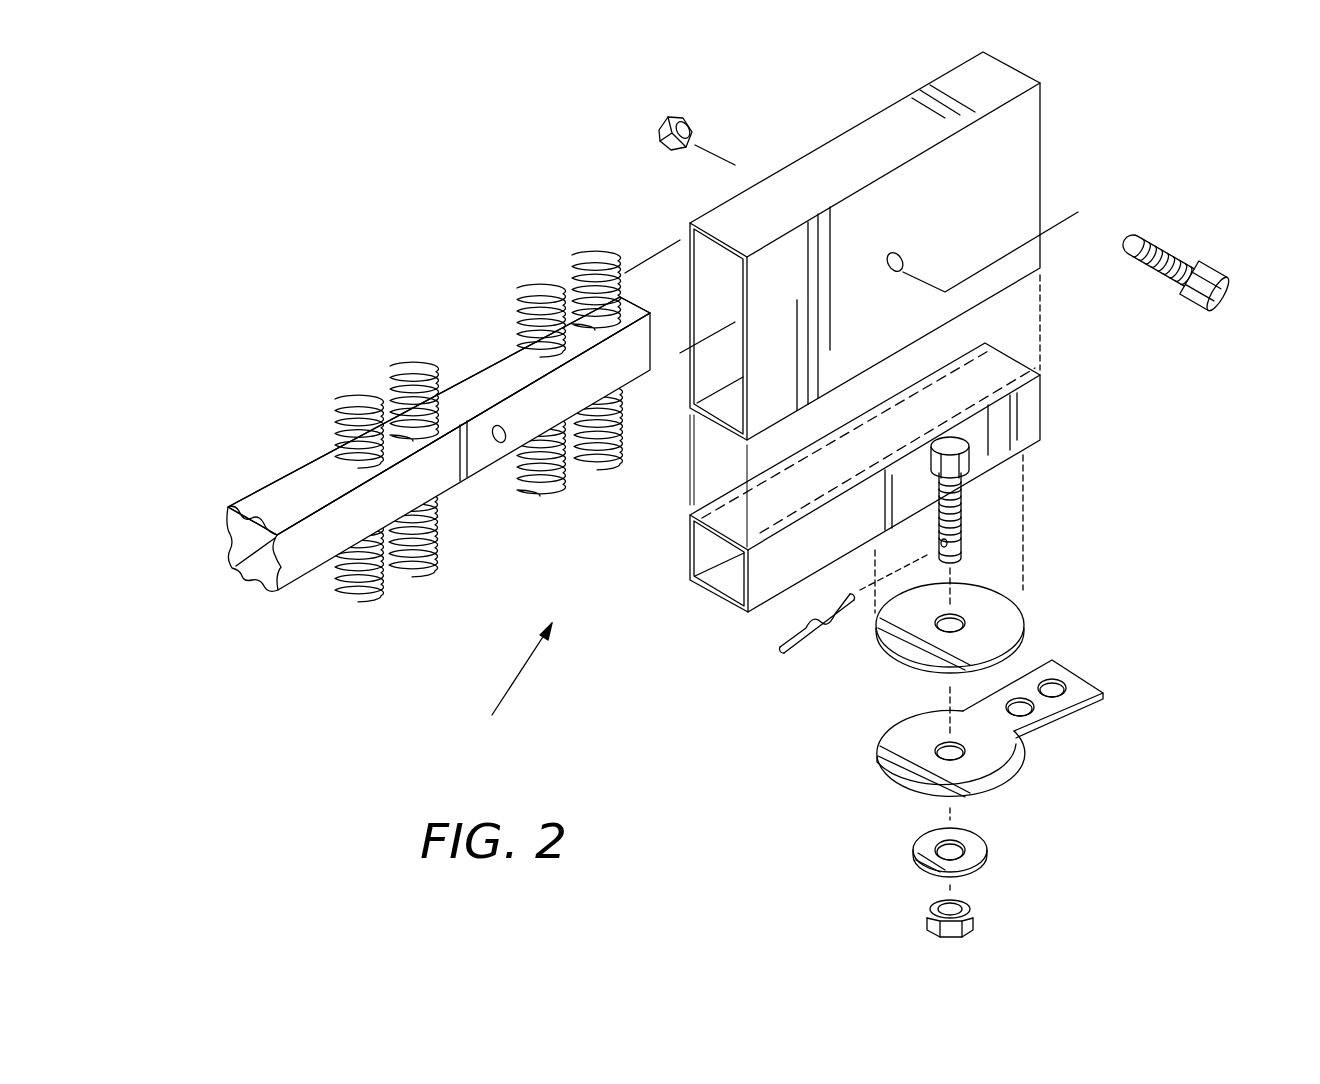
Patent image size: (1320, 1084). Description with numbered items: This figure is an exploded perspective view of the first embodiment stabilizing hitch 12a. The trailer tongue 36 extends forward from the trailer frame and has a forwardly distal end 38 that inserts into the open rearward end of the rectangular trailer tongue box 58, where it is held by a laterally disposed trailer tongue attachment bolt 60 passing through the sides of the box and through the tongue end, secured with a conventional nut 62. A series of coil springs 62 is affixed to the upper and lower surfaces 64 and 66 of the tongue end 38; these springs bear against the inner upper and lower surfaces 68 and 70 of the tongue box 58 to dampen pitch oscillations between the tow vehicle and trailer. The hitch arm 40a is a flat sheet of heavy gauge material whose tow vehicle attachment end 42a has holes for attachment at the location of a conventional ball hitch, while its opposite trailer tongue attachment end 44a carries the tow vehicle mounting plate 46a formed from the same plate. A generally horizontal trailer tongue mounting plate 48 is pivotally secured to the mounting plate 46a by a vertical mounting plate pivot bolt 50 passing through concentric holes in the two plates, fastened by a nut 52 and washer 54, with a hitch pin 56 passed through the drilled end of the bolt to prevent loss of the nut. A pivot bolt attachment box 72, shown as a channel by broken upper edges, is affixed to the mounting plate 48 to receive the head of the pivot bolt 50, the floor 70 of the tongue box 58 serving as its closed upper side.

The stabilizing hitch 12a is at (492, 673).
The trailer tongue 36 is at (240, 512).
The forwardly distal end 38 is at (484, 362).
The hitch arm 40a is at (981, 715).
The tow vehicle attachment end 42a is at (1102, 672).
The trailer tongue attachment end 44a is at (1027, 750).
The tow vehicle mounting plate 46a is at (878, 765).
The trailer tongue mounting plate 48 is at (1018, 623).
The mounting plate pivot bolt 50 is at (966, 545).
The nut 52 is at (927, 921).
The washer 54 is at (990, 850).
The hitch pin 56 is at (783, 655).
The trailer tongue box 58 is at (856, 128).
The trailer tongue attachment bolt 60 is at (1200, 305).
The coil springs 62 is at (661, 118).
The upper surface 64 is at (283, 492).
The lower surface 66 is at (265, 578).
The upper surface of tongue box 68 is at (747, 228).
The floor of tongue box 70 is at (728, 420).
The pivot bolt attachment box 72 is at (710, 591).